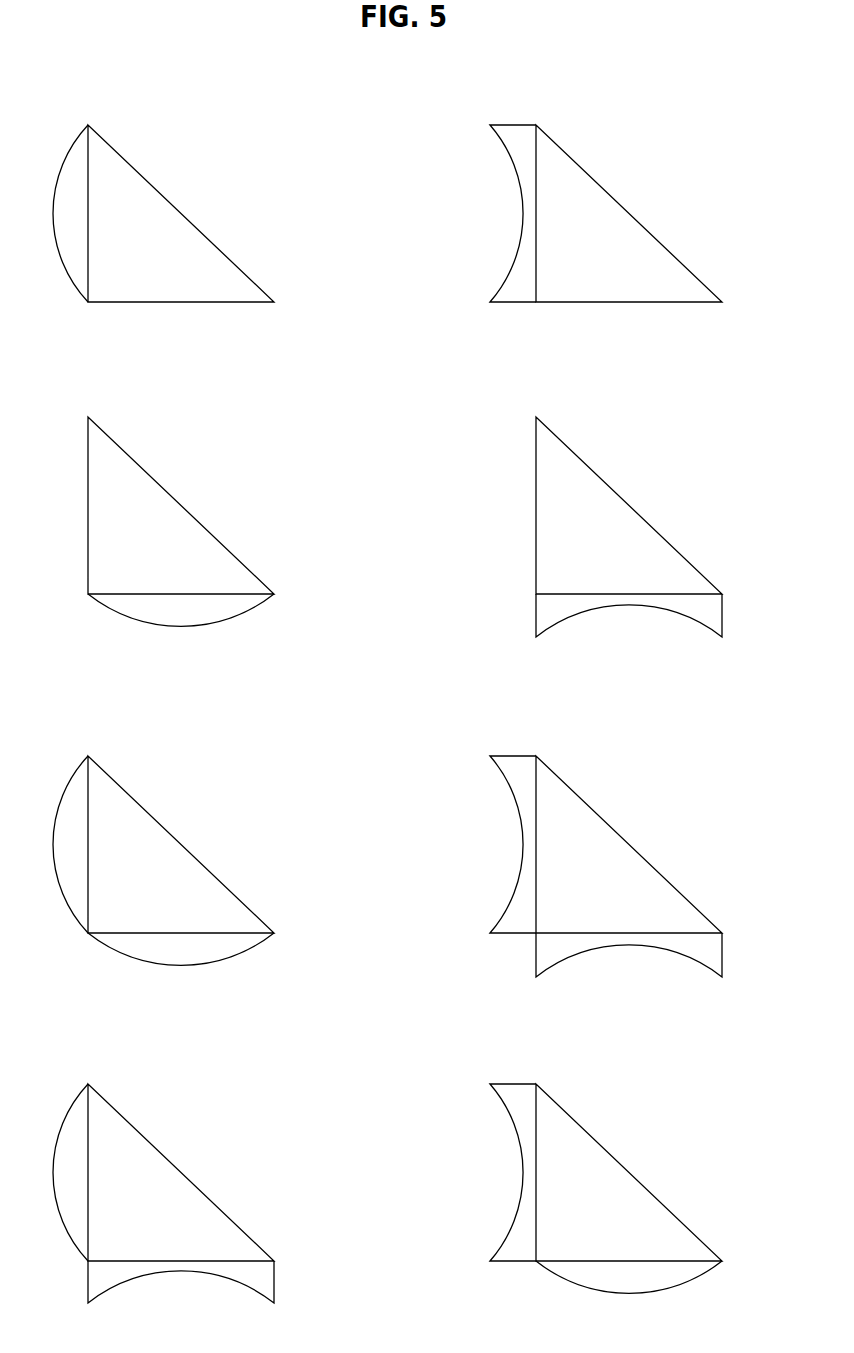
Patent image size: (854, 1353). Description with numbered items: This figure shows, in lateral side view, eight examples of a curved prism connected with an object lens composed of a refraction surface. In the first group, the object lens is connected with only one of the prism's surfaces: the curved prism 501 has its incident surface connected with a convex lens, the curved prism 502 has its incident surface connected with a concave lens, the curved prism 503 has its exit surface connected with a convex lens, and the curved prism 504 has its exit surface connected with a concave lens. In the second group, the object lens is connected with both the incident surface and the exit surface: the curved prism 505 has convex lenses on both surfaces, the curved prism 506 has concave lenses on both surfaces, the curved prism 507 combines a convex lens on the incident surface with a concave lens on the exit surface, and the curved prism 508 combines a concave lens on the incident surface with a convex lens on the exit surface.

The curved prism 501 is at (195, 190).
The curved prism 502 is at (643, 190).
The curved prism 503 is at (195, 490).
The curved prism 504 is at (643, 490).
The curved prism 505 is at (195, 830).
The curved prism 506 is at (643, 830).
The curved prism 507 is at (195, 1164).
The curved prism 508 is at (643, 1164).